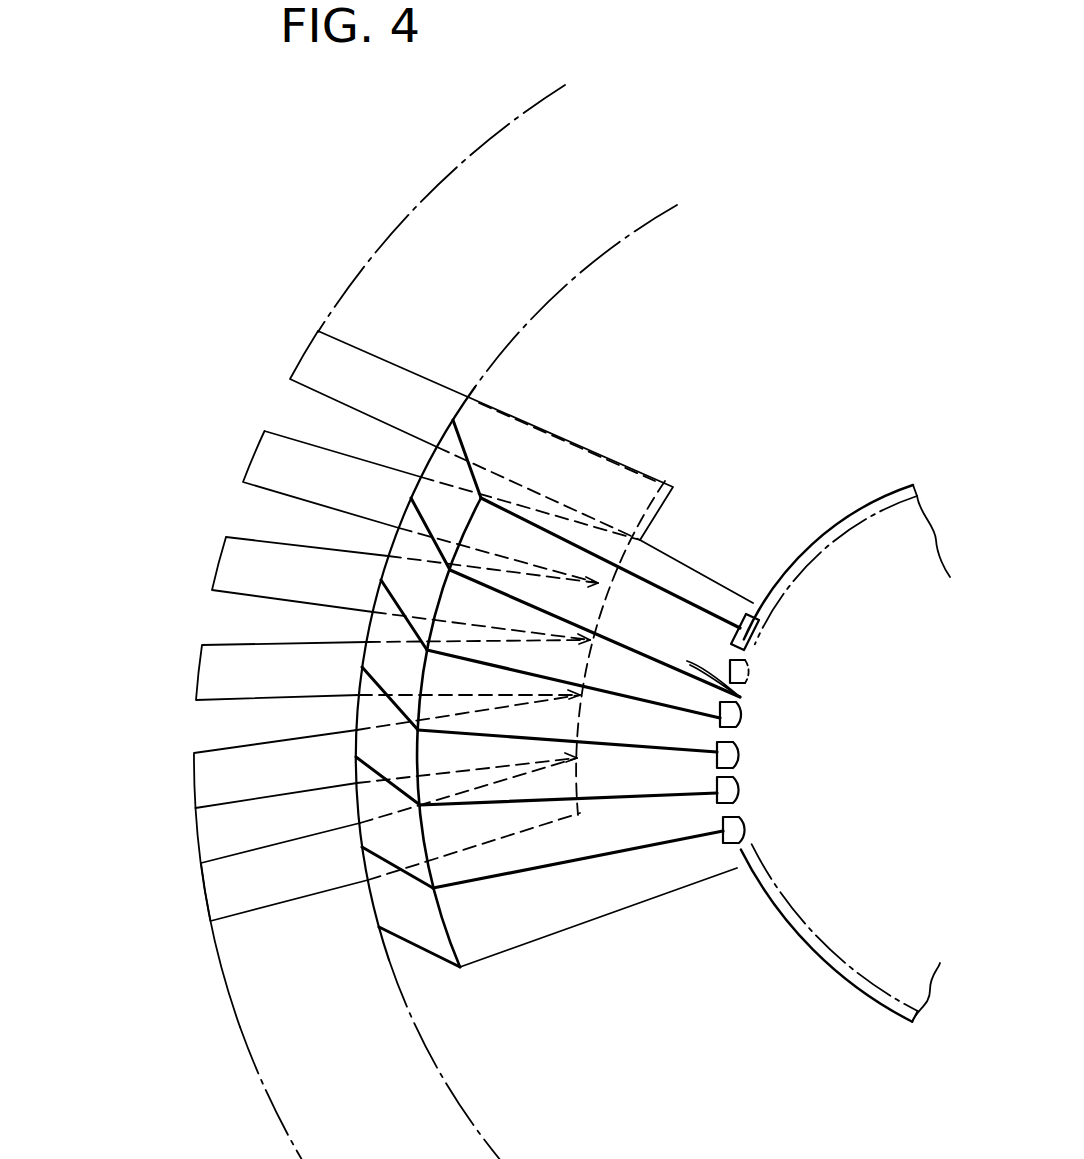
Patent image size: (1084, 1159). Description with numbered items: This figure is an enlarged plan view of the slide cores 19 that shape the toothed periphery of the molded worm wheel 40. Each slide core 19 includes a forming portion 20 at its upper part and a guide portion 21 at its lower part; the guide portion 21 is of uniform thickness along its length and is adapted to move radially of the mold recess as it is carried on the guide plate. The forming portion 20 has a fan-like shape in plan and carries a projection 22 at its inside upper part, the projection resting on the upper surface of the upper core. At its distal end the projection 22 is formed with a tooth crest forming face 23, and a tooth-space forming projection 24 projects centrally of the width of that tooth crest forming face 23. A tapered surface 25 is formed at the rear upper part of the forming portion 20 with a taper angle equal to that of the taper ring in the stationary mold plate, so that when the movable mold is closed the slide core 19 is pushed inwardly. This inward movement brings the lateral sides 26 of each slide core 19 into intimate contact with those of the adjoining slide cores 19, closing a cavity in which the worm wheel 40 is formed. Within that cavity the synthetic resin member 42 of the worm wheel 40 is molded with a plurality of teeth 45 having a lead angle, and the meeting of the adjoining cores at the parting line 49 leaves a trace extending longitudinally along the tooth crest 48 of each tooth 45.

The slide core 19 is at (596, 426).
The forming portion 20 is at (643, 530).
The guide portion 21 is at (402, 366).
The projection 22 is at (692, 578).
The tooth crest forming face 23 is at (762, 650).
The tooth-space forming projection 24 is at (763, 657).
The tapered surface 25 is at (452, 480).
The lateral sides 26 is at (677, 704).
The worm wheel 40 is at (851, 505).
The synthetic resin member 42 is at (893, 487).
The teeth 45 is at (745, 820).
The tooth crest 48 is at (740, 852).
The parting line 49 is at (732, 845).